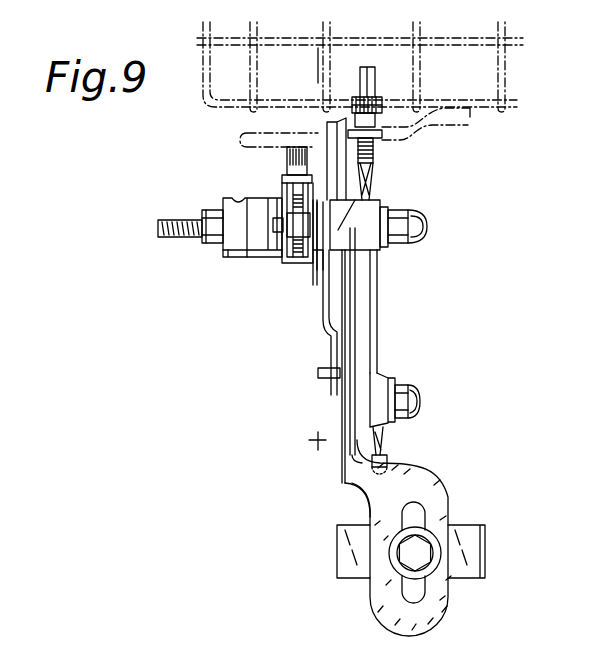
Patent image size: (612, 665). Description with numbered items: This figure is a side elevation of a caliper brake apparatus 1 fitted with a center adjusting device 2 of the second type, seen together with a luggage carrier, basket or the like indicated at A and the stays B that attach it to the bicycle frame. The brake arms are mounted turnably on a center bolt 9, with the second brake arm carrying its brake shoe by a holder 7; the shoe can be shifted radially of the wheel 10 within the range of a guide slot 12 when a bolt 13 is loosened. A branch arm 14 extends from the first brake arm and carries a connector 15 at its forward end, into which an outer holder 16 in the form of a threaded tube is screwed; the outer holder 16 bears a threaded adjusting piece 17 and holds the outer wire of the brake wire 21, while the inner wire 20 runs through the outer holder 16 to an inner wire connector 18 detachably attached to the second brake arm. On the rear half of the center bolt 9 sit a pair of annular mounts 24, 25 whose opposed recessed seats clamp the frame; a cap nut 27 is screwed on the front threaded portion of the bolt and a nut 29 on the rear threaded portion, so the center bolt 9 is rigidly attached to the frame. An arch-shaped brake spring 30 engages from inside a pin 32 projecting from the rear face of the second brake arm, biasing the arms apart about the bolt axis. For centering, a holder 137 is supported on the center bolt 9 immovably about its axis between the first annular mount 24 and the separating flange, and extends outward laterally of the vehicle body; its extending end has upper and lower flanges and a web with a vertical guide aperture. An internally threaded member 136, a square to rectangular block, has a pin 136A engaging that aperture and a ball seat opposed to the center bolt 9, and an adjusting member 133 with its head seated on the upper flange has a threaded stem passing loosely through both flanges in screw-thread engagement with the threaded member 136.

The caliper brake apparatus 1 is at (422, 375).
The center adjusting device 2 is at (323, 160).
The holder 7 is at (489, 580).
The center bolt 9 is at (163, 238).
The wheel 10 is at (306, 53).
The guide slot 12 is at (423, 516).
The bolt 13 is at (403, 558).
The branch arm 14 is at (348, 192).
The connector 15 is at (384, 140).
The outer holder 16 is at (385, 106).
The threaded adjusting piece 17 is at (383, 133).
The inner wire connector 18 is at (421, 398).
The inner wire 20 is at (386, 444).
The brake wire 21 is at (392, 76).
The annular mount 24 is at (258, 253).
The annular mount 25 is at (225, 258).
The cap nut 27 is at (427, 226).
The nut 29 is at (210, 210).
The brake spring 30 is at (323, 346).
The pin 32 is at (318, 378).
The adjusting member 133 is at (290, 166).
The internally threaded member 136 is at (303, 258).
The pin 136A is at (278, 226).
The holder 137 is at (283, 264).
The luggage carrier, basket or the like A is at (508, 73).
The stays B is at (246, 130).